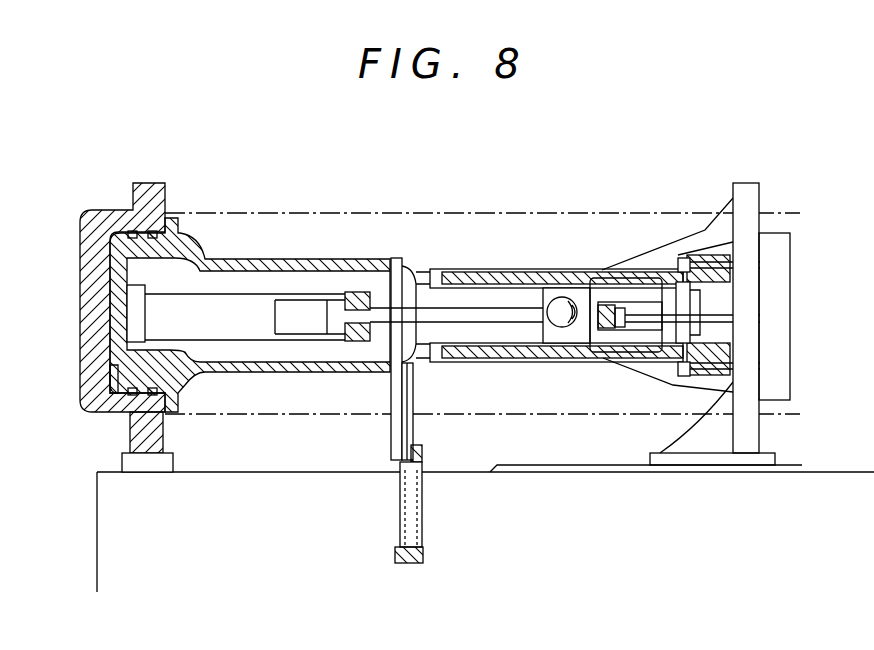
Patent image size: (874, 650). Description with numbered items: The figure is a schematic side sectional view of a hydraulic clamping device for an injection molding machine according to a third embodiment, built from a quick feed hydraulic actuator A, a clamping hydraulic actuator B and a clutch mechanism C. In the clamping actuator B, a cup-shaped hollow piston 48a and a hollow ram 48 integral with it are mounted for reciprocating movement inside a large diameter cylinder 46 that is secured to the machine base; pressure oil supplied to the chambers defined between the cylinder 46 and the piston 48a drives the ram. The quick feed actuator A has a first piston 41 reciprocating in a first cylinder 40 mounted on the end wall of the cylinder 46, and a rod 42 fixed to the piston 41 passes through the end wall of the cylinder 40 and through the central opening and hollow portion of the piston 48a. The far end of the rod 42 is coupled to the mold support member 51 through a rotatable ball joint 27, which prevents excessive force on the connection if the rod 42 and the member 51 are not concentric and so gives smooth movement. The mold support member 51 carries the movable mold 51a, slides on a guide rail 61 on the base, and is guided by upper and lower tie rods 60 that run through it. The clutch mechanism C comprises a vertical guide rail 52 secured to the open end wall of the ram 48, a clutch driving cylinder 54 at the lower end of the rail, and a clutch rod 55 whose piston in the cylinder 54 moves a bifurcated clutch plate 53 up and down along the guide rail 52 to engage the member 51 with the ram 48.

The ball joint 27 is at (553, 298).
The first cylinder 40 is at (188, 326).
The first piston 41 is at (330, 320).
The rod 42 is at (516, 323).
The large diameter cylinder 46 is at (90, 278).
The hollow ram 48 is at (291, 266).
The cup-shaped hollow piston 48a is at (107, 350).
The mold support member 51 is at (740, 190).
The movable mold 51a is at (785, 320).
The vertical guide rail 52 is at (390, 394).
The bifurcated clutch plate 53 is at (422, 282).
The clutch driving cylinder 54 is at (424, 507).
The clutch rod 55 is at (414, 394).
The tie rods 60 is at (468, 211).
The guide rail 61 is at (548, 468).
The first quick feed hydraulic actuator A is at (228, 288).
The second clamping hydraulic actuator B is at (339, 257).
The clutch mechanism C is at (398, 506).